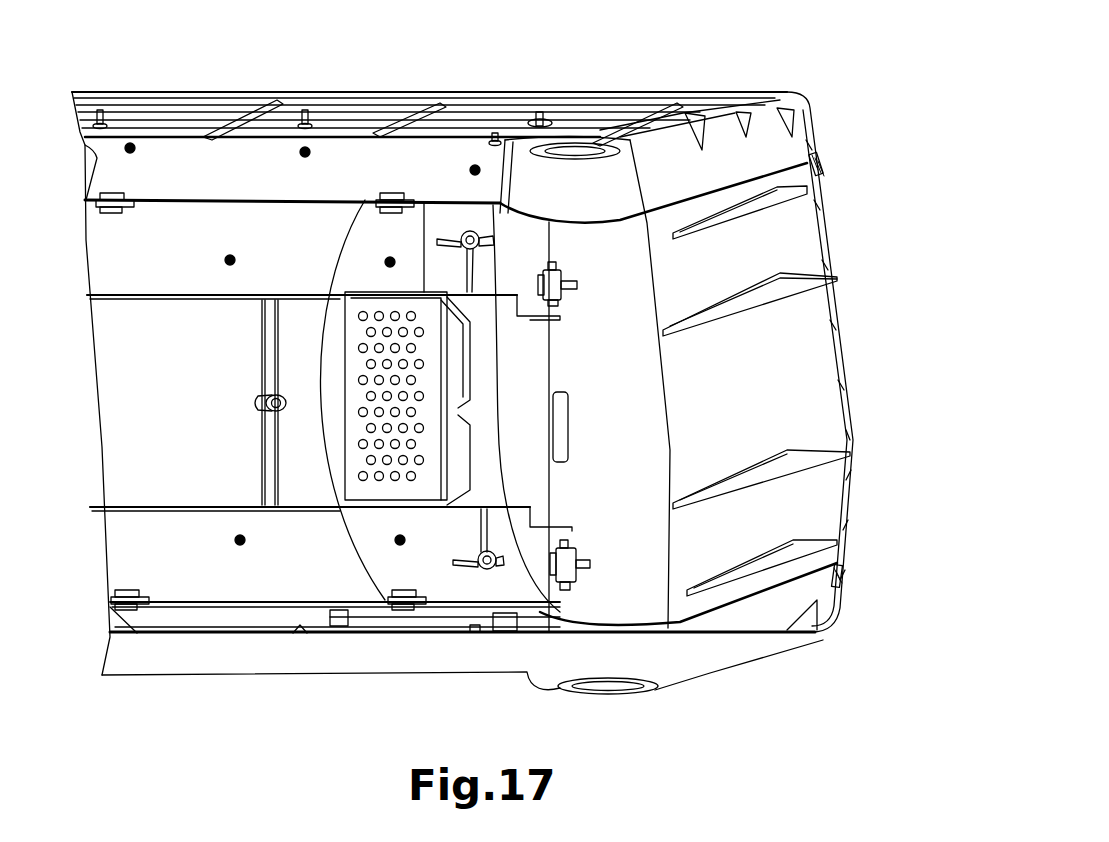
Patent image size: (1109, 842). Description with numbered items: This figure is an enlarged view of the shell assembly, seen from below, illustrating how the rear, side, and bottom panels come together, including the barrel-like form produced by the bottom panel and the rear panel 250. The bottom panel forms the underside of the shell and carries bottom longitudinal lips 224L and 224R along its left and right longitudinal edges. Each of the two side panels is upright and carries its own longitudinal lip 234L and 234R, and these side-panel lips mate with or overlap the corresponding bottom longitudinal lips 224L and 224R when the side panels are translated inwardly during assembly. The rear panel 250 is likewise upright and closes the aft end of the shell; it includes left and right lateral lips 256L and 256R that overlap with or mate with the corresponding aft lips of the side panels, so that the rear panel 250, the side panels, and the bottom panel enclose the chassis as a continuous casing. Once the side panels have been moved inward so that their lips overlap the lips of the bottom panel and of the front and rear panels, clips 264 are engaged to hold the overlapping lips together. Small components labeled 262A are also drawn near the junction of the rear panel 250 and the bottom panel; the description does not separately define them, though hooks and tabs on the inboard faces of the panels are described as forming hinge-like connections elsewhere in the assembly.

The rear panel 250 is at (507, 393).
The longitudinal lip 234R is at (240, 197).
The bottom longitudinal lip 224R is at (323, 197).
The right lateral lip 256R is at (820, 162).
The longitudinal lip 234L is at (260, 607).
The bottom longitudinal lip 224L is at (313, 620).
The left lateral lip 256L is at (840, 577).
The switch 262A is at (552, 283).
The clips 264 is at (123, 193).